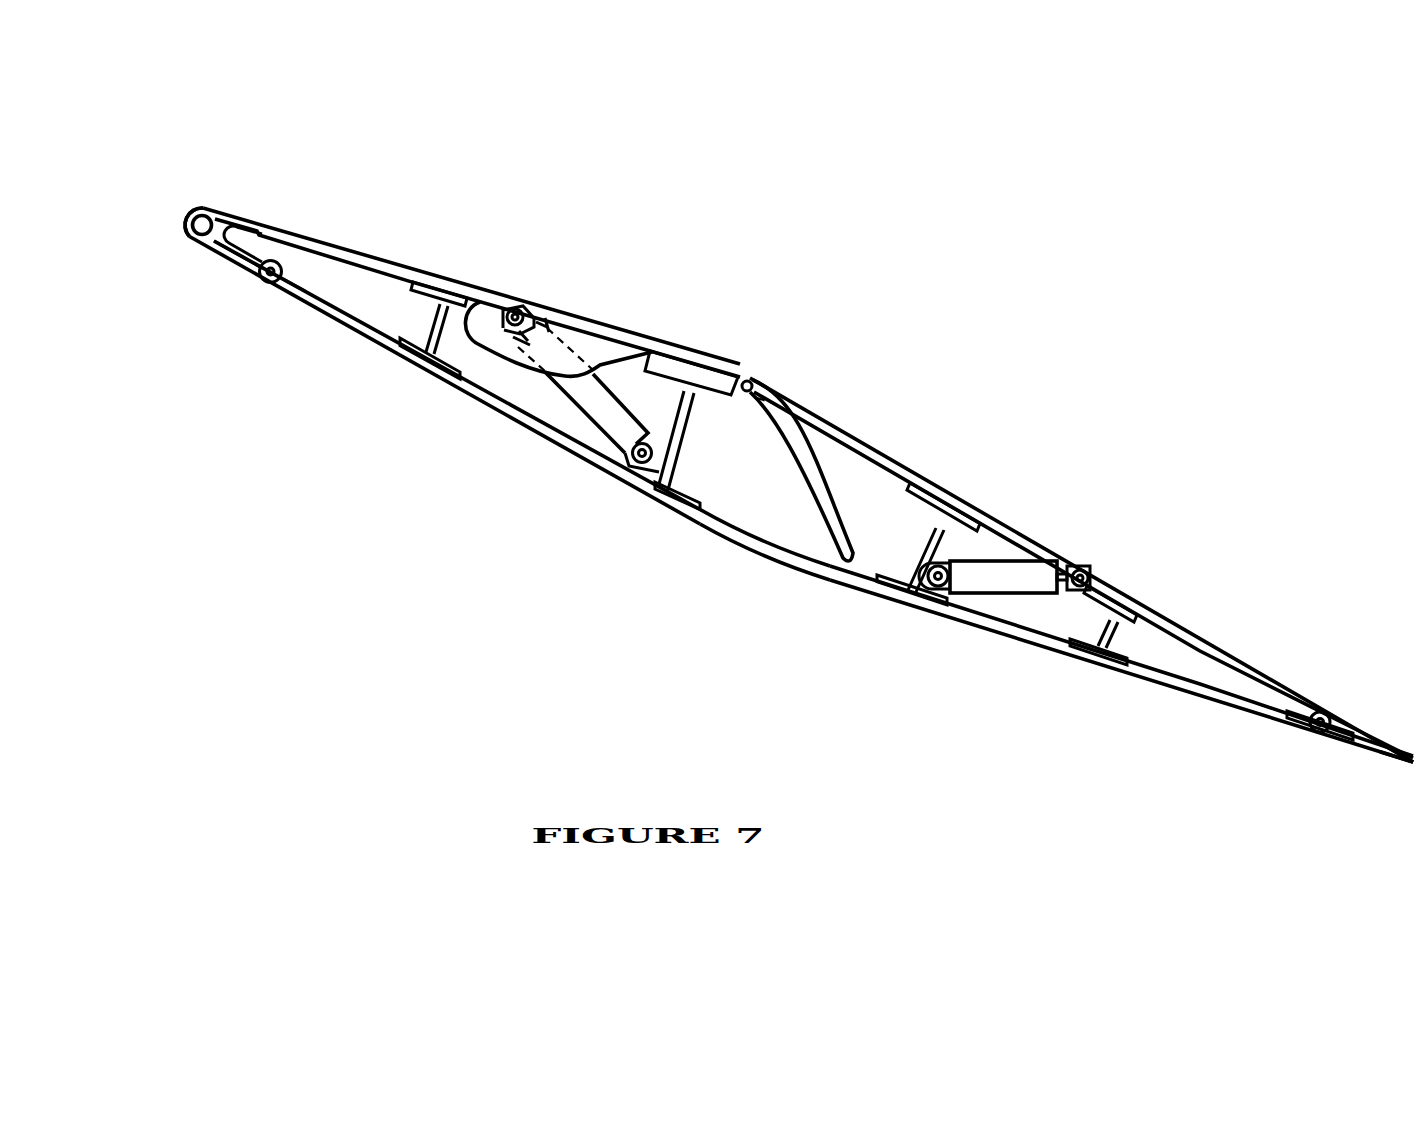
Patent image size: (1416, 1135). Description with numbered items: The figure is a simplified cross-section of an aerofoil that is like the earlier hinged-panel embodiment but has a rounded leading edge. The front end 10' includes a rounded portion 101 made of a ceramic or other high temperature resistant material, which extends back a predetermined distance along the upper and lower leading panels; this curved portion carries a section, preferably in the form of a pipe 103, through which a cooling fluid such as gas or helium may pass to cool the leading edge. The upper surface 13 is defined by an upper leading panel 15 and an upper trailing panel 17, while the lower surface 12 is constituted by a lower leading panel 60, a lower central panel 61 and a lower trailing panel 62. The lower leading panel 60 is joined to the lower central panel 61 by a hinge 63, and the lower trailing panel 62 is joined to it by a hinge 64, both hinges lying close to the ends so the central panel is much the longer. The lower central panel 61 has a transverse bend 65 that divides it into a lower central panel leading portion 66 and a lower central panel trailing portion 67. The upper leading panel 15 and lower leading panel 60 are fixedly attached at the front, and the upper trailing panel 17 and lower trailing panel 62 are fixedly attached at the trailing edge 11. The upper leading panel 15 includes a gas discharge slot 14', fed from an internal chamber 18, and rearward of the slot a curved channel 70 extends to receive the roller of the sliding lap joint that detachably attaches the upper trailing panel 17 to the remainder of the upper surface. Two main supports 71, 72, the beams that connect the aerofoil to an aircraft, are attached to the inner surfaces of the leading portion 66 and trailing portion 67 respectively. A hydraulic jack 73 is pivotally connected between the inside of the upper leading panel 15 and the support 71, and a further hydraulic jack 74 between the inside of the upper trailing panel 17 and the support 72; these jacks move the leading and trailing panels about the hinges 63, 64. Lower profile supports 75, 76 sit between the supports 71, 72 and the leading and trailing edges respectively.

The front end 10' is at (167, 190).
The rounded portion 101 is at (183, 231).
The pipe 103 is at (210, 218).
The lower leading panel 60 is at (233, 272).
The hinge 63 is at (275, 287).
The upper leading panel 15 is at (447, 279).
The lower central panel leading portion 66 is at (487, 410).
The transverse bend 65 is at (717, 543).
The lower surface 12 is at (732, 576).
The lower central panel 61 is at (803, 601).
The lower central panel trailing portion 67 is at (1030, 647).
The lower trailing panel 62 is at (1383, 762).
The trailing edge 11 is at (1415, 820).
The upper trailing panel 17 is at (1020, 537).
The upper surface 13 is at (766, 354).
The gas discharge slot 14' is at (764, 323).
The chamber 18 is at (583, 340).
The curved channel 70 is at (813, 467).
The hydraulic jack 73 is at (592, 413).
The lower profile support 75 is at (415, 368).
The support 71 is at (650, 505).
The support 72 is at (910, 583).
The lower profile support 76 is at (1100, 647).
The hydraulic jack 74 is at (1000, 580).
The hinge 64 is at (1308, 740).